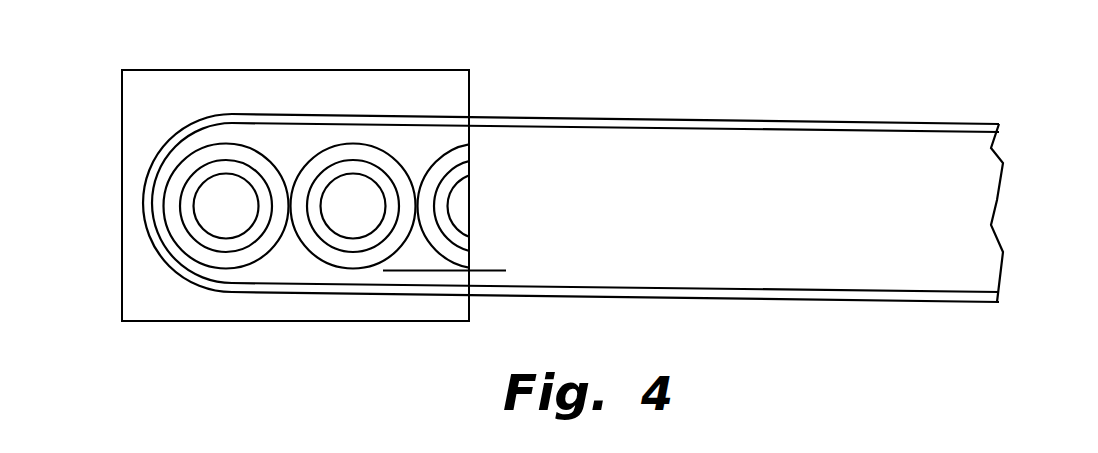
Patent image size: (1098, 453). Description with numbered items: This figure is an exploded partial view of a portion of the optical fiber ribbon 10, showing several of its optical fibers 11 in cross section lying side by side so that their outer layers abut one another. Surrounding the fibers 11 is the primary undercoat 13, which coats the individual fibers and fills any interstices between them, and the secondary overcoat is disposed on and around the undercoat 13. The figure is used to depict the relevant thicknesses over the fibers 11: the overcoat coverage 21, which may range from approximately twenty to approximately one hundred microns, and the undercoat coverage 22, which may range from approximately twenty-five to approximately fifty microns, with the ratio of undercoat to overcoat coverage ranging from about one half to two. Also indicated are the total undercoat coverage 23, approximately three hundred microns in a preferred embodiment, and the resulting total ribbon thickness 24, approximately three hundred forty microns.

The optical fiber ribbon 10 is at (82, 163).
The optical fibers 11 is at (220, 178).
The primary undercoat 13 is at (263, 271).
The overcoat coverage 21 is at (495, 65).
The undercoat coverage 22 is at (495, 215).
The total undercoat coverage 23 is at (597, 131).
The total ribbon thickness 24 is at (1021, 123).